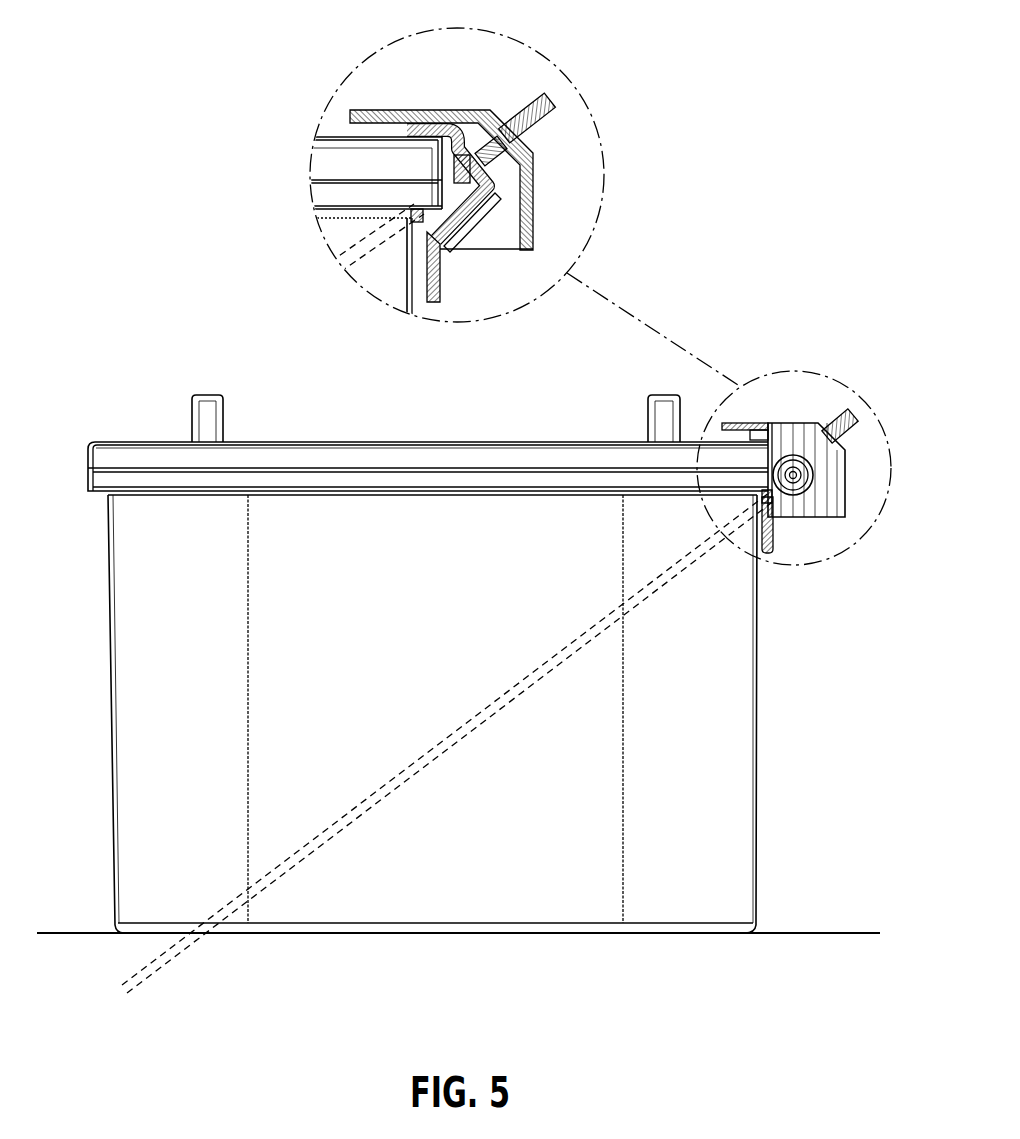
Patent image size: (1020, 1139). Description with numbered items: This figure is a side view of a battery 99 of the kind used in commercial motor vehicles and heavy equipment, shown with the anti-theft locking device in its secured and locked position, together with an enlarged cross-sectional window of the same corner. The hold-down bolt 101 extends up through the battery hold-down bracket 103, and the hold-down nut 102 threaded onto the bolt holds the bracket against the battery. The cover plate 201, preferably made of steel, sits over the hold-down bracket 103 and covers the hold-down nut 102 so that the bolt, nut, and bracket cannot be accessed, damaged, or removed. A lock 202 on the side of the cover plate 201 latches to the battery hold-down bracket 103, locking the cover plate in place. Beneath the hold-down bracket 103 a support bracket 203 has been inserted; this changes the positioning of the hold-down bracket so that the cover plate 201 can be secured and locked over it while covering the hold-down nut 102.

The battery 99 is at (728, 802).
The hold-down bolt 101 is at (558, 103).
The hold-down nut 102 is at (533, 207).
The hold-down bracket 103 is at (440, 240).
The cover plate 201 is at (452, 110).
The lock 202 is at (800, 462).
The support bracket 203 is at (457, 210).